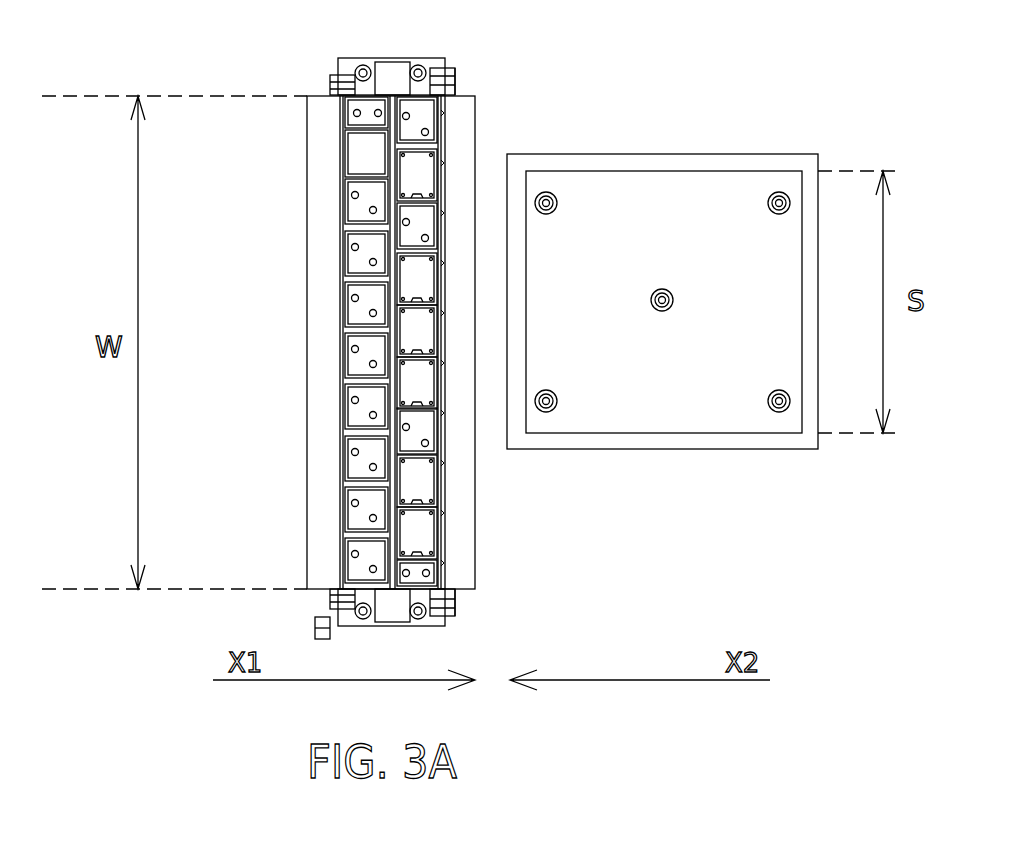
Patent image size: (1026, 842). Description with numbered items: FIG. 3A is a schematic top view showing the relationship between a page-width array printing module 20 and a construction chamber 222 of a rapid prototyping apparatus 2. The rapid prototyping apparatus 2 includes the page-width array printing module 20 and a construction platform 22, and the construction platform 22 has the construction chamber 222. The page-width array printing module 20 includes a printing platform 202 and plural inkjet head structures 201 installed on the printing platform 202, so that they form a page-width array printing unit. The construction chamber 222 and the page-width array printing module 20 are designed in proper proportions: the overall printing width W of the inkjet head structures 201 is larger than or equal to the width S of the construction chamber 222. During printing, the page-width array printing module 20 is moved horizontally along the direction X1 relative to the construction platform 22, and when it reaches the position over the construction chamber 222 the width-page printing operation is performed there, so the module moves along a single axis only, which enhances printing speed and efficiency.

The rapid prototyping apparatus 2 is at (997, 53).
The page-width array printing module 20 is at (332, 322).
The inkjet head structure 201 is at (357, 168).
The printing platform 202 is at (458, 118).
The construction platform 22 is at (696, 263).
The construction chamber 222 is at (690, 203).